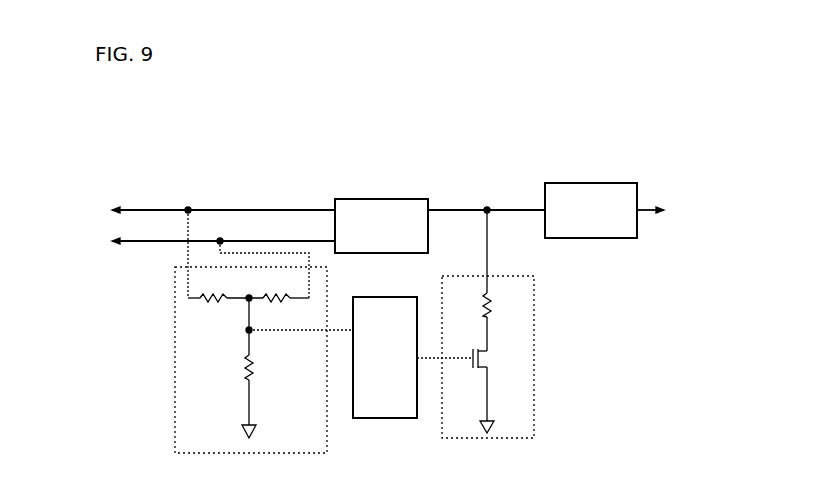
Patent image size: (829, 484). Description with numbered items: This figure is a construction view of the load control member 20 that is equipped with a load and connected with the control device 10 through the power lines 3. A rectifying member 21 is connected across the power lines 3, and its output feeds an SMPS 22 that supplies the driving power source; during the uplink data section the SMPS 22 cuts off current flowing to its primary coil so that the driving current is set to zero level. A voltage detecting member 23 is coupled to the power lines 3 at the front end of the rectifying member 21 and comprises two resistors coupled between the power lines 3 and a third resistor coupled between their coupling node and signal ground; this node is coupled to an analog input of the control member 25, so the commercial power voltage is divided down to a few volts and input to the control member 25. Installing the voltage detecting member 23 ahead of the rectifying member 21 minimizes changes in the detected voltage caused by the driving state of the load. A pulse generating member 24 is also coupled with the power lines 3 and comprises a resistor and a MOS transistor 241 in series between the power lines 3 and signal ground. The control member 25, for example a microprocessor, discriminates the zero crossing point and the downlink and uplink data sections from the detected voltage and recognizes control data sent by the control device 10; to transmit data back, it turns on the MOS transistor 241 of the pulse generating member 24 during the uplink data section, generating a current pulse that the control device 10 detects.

The control device 10 is at (85, 226).
The power lines 3 is at (244, 240).
The load control member 20 is at (466, 167).
The rectifying member 21 is at (378, 199).
The SMPS 22 is at (588, 183).
The voltage detecting member 23 is at (175, 405).
The pulse generating member 24 is at (501, 324).
The MOS transistor 241 is at (489, 357).
The control member 25 is at (388, 420).